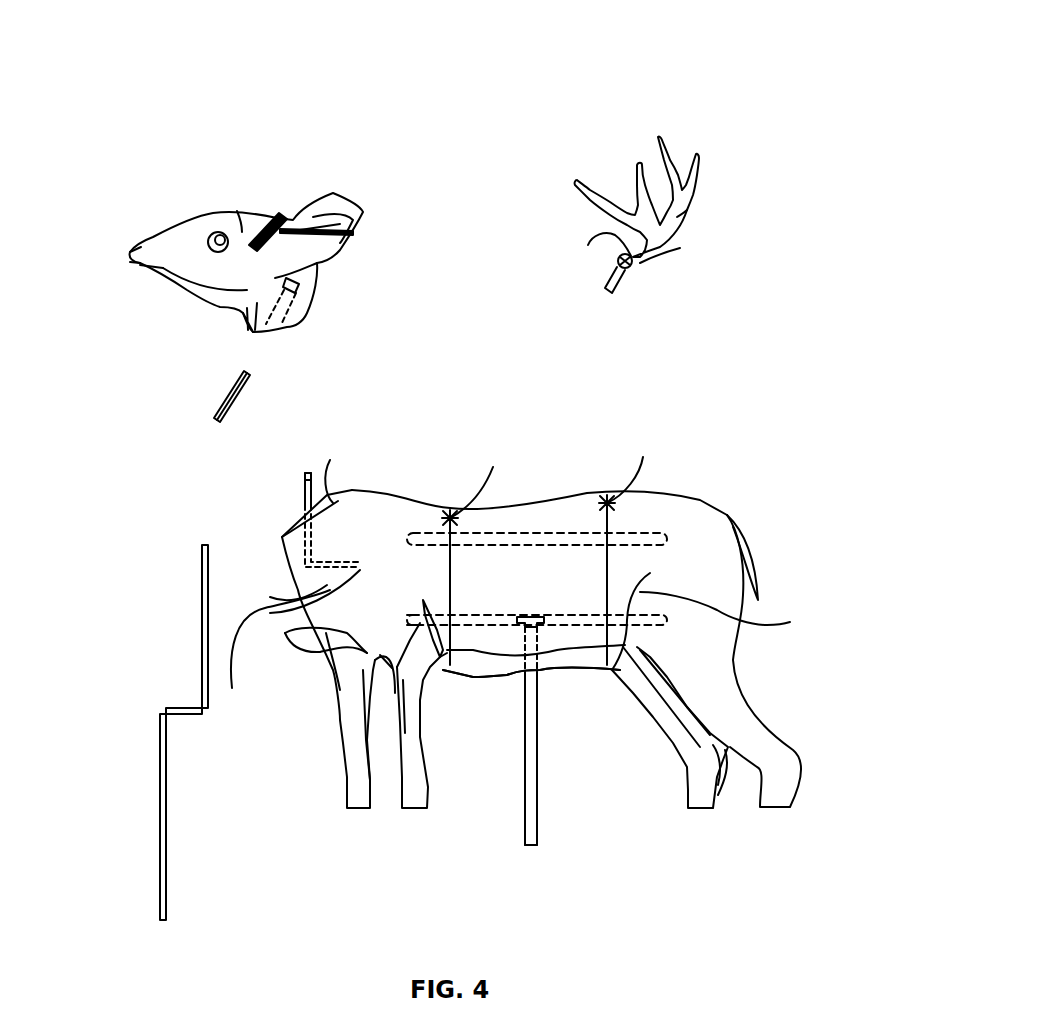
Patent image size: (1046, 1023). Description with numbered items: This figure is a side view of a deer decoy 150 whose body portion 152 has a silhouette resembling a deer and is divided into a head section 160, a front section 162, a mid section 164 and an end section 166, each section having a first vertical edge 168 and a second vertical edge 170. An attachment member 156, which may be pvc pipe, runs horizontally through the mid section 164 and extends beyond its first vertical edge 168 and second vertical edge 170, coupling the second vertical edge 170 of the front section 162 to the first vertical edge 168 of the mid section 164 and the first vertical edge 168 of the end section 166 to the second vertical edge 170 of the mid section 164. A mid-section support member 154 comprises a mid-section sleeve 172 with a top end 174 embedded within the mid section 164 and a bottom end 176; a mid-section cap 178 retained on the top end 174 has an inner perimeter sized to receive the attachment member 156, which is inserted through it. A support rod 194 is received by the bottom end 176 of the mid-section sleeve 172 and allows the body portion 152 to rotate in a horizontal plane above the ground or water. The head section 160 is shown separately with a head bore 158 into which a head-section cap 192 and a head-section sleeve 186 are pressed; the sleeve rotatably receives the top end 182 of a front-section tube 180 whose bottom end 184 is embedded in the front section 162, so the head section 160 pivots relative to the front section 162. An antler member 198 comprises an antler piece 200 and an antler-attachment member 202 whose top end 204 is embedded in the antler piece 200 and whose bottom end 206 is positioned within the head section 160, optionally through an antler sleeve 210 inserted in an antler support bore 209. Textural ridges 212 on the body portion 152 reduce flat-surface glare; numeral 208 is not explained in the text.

The deer decoy 150 is at (455, 86).
The body portion 152 is at (482, 363).
The mid-section support member 154 is at (525, 657).
The attachment member 156 is at (417, 627).
The head bore 158 is at (303, 285).
The head section 160 is at (241, 230).
The front section 162 is at (283, 576).
The mid section 164 is at (517, 523).
The end section 166 is at (710, 687).
The first vertical edge 168 is at (340, 495).
The second vertical edge 170 is at (450, 518).
The mid-section sleeve 172 is at (530, 750).
The top end 174 is at (532, 635).
The bottom end 176 is at (535, 828).
The mid-section cap 178 is at (540, 615).
The front-section tube 180 is at (303, 496).
The top end 182 is at (306, 473).
The bottom end 184 is at (276, 652).
The head-section sleeve 186 is at (237, 403).
The head-section cap 192 is at (290, 290).
The support rod 194 is at (152, 680).
The antler member 198 is at (693, 130).
The antler piece 200 is at (687, 205).
The antler-attachment member 202 is at (627, 268).
The top end 204 is at (588, 246).
The bottom end 206 is at (608, 291).
The antler tine 208 is at (640, 263).
The antler support bore 209 is at (262, 232).
The antler sleeve 210 is at (355, 232).
The textural ridges 212 is at (300, 640).